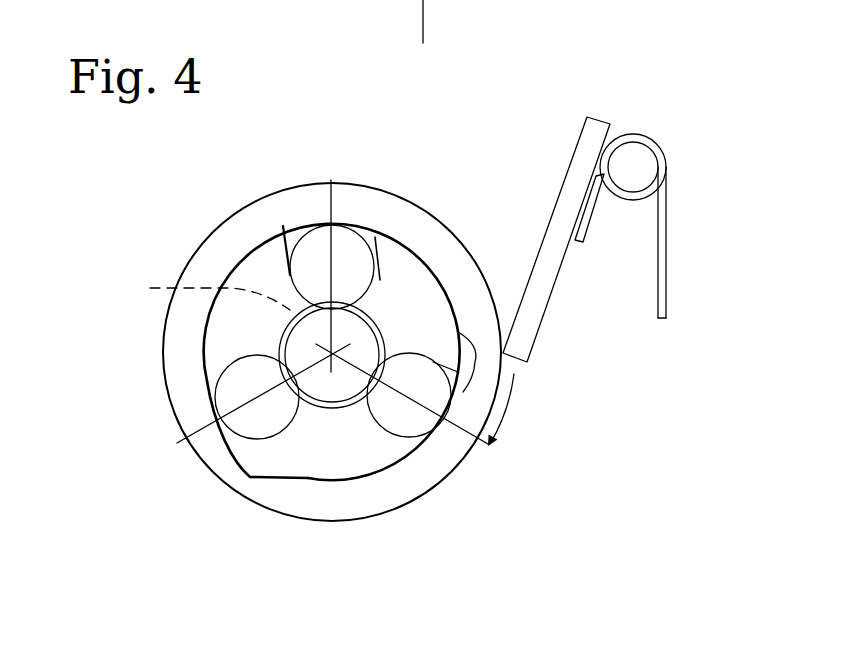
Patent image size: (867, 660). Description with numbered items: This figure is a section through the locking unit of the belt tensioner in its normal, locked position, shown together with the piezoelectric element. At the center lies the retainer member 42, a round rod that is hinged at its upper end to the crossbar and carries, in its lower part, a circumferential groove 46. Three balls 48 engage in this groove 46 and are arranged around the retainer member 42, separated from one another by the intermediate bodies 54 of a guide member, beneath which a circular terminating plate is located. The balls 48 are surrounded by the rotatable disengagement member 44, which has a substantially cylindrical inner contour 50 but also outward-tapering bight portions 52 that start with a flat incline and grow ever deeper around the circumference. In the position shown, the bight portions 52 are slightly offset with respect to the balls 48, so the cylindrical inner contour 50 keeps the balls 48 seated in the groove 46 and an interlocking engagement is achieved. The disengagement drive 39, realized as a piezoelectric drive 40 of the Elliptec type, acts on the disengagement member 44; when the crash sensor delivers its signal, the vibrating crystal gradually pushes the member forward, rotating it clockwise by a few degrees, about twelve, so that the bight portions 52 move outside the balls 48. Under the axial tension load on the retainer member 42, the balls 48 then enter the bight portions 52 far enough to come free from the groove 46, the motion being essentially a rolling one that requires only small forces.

The disengagement drive 39 is at (567, 382).
The piezoelectric drive 40 is at (618, 120).
The retainer member 42 is at (347, 375).
The disengagement member 44 is at (418, 224).
The circumferential groove 46 is at (148, 286).
The balls 48 is at (238, 387).
The cylindrical inner contour 50 is at (399, 468).
The bight portions 52 is at (248, 468).
The intermediate bodies 54 is at (228, 332).